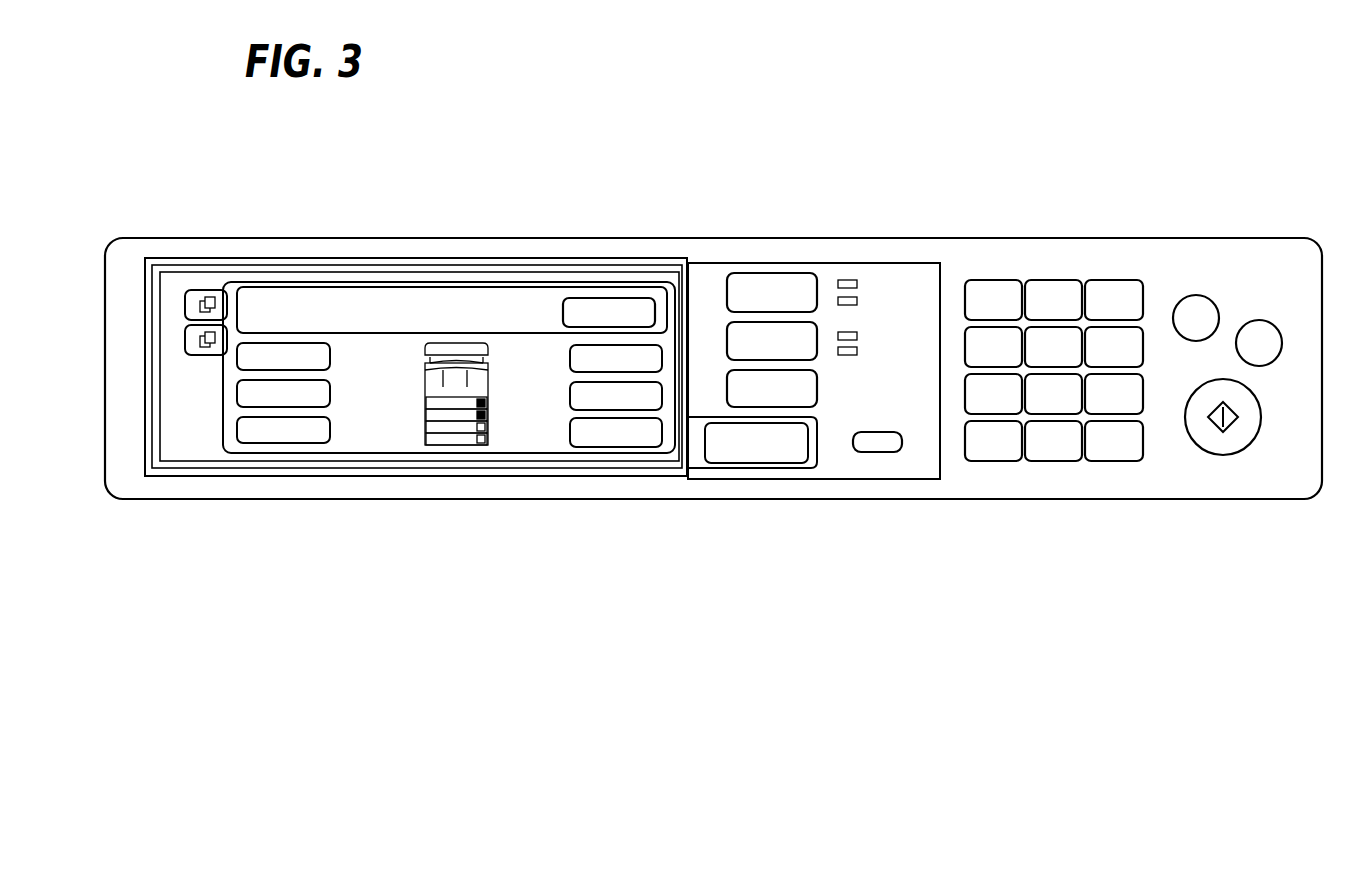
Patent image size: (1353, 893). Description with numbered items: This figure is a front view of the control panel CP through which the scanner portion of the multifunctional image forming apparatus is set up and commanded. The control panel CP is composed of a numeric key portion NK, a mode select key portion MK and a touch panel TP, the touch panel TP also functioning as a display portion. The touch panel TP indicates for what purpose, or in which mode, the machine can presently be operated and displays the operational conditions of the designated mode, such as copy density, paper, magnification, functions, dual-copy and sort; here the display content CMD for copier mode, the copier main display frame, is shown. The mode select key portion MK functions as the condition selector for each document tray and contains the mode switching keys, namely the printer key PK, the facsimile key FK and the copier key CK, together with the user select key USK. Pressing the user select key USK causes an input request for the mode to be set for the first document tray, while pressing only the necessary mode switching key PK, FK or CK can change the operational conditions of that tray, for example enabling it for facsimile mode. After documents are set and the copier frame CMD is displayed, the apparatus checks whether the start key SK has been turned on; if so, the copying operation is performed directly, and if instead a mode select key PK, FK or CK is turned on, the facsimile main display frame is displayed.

The control panel CP is at (1195, 165).
The touch panel TP is at (473, 237).
The display content for copier mode CMD is at (377, 446).
The mode select key portion MK is at (822, 238).
The printer key PK is at (757, 272).
The facsimile key FK is at (728, 342).
The copier key CK is at (728, 390).
The user select key USK is at (877, 453).
The numeric key portion NK is at (1005, 240).
The start key SK is at (1216, 455).